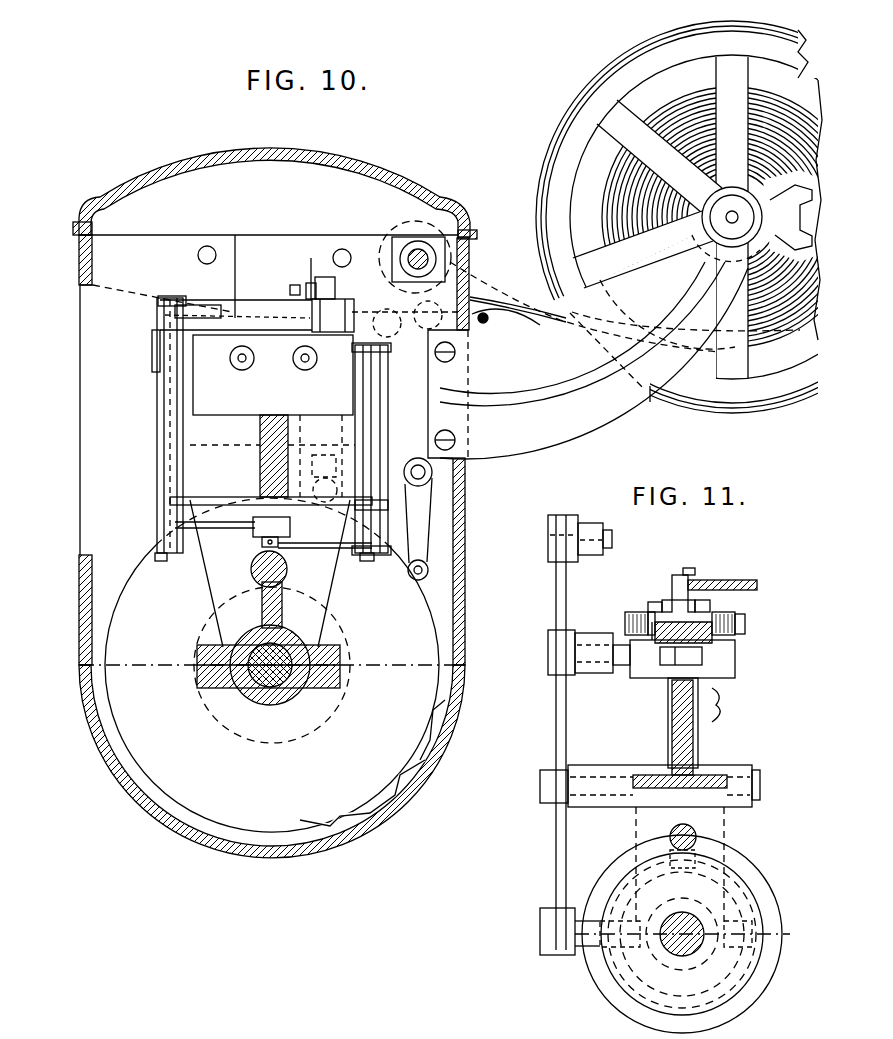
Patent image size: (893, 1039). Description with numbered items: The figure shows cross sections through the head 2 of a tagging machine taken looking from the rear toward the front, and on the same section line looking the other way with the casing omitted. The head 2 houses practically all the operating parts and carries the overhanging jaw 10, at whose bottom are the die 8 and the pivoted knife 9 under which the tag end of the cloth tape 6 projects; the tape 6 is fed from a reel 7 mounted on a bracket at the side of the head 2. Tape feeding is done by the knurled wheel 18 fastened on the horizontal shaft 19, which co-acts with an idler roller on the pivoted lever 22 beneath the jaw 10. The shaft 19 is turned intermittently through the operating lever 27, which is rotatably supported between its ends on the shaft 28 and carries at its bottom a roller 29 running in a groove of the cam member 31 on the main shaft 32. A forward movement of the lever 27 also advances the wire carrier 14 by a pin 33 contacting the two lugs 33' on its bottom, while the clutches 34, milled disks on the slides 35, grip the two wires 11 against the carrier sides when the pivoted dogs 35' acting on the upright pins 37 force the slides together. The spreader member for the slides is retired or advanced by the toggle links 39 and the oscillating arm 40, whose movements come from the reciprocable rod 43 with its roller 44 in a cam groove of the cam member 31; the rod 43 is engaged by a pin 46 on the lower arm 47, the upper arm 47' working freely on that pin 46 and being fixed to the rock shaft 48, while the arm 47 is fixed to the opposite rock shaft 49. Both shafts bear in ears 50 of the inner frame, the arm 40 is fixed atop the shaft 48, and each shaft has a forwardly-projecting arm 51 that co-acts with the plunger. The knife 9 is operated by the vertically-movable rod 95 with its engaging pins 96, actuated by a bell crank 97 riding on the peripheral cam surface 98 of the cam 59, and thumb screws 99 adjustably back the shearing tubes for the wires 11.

In FIG. 10, the head 2 is at (78, 253).
In FIG. 11, the head 2 is at (696, 748).
In FIG. 10, the cloth tape 6 is at (545, 310).
In FIG. 10, the reel 7 is at (540, 213).
In FIG. 10, the die 8 is at (268, 305).
In FIG. 10, the pivoted knife 9 is at (310, 280).
In FIG. 10, the overhanging jaw 10 is at (271, 245).
In FIG. 10, the wires 11 is at (238, 362).
In FIG. 11, the wires 11 is at (653, 612).
In FIG. 11, the carrier 14 is at (722, 650).
In FIG. 10, the knurled wheel 18 is at (408, 226).
In FIG. 10, the horizontal shaft 19 is at (440, 258).
In FIG. 10, the pivoted lever 22 is at (495, 325).
In FIG. 11, the operating lever 27 is at (556, 578).
In FIG. 11, the shaft 28 is at (542, 786).
In FIG. 11, the roller 29 is at (572, 955).
In FIG. 11, the cam member 31 is at (615, 996).
In FIG. 11, the main shaft 32 is at (700, 926).
In FIG. 11, the pin 33 is at (589, 669).
In FIG. 11, the lugs 33' is at (666, 690).
In FIG. 11, the clutches 34 is at (627, 624).
In FIG. 11, the slides 35 is at (694, 605).
In FIG. 11, the pivoted dogs 35' is at (697, 577).
In FIG. 11, the upright pins 37 is at (668, 600).
In FIG. 11, the toggle links 39 is at (690, 598).
In FIG. 11, the oscillating arm 40 is at (758, 585).
In FIG. 10, the reciprocable rod 43 is at (288, 572).
In FIG. 11, the reciprocable rod 43 is at (694, 828).
In FIG. 11, the roller 44 is at (696, 856).
In FIG. 10, the pin 46 is at (290, 520).
In FIG. 10, the lower arm 47 is at (317, 573).
In FIG. 10, the upper arm 47' is at (215, 573).
In FIG. 10, the rock shaft 48 is at (168, 562).
In FIG. 10, the rock shaft 49 is at (372, 562).
In FIG. 10, the ears 50 is at (160, 467).
In FIG. 10, the forwardly-projecting arms 51 is at (160, 352).
In FIG. 10, the cam 59 is at (108, 605).
In FIG. 10, the vertically-movable rod 95 is at (336, 286).
In FIG. 10, the engaging pins 96 is at (290, 290).
In FIG. 10, the bell crank 97 is at (432, 508).
In FIG. 10, the peripheral cam surface 98 is at (437, 702).
In FIG. 10, the thumb screws 99 is at (242, 371).